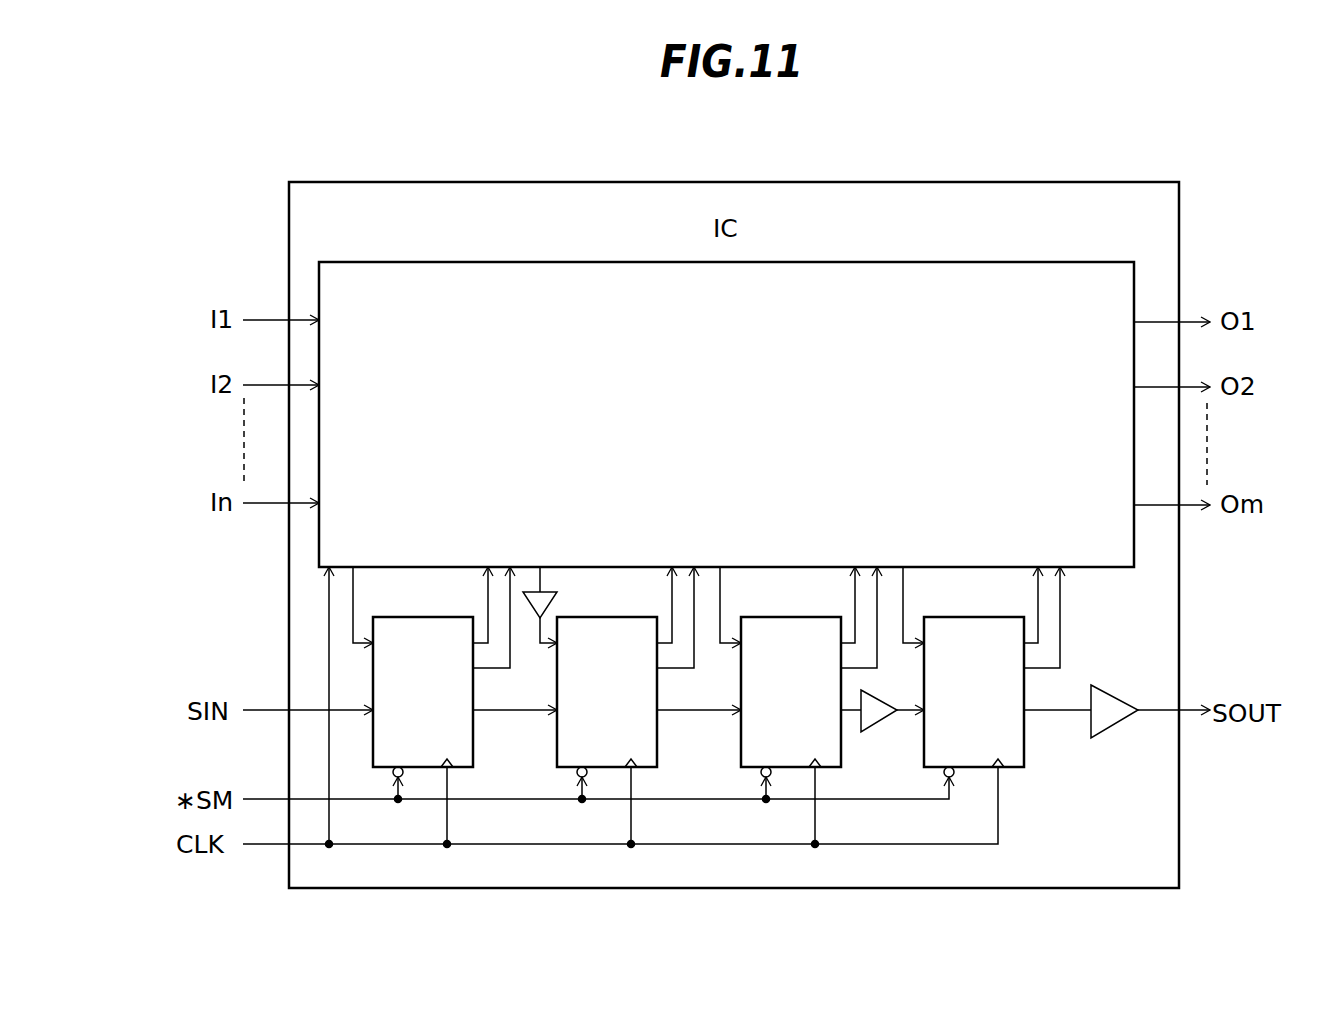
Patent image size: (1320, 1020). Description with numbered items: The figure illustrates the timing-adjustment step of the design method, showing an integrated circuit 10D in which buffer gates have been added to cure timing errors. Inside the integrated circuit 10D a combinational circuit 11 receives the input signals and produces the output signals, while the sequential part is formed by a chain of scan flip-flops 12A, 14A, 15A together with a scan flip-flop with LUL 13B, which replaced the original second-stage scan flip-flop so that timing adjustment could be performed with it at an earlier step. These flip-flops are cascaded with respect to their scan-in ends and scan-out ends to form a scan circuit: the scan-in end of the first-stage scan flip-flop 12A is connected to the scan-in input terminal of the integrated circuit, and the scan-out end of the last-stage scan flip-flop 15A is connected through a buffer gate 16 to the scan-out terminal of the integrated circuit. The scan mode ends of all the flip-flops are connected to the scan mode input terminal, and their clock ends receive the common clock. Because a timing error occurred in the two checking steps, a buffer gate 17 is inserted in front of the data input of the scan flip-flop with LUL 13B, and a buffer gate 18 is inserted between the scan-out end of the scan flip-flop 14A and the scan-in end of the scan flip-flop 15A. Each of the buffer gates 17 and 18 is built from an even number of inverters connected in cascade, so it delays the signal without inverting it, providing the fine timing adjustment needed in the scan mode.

The integrated circuit 10D is at (733, 182).
The combinational circuit 11 is at (913, 262).
The scan flip-flop 12A is at (405, 613).
The scan flip-flop with LUL 13B is at (589, 613).
The scan flip-flop 14A is at (773, 613).
The scan flip-flop 15A is at (956, 613).
The buffer gate 16 is at (1113, 692).
The buffer gate 17 is at (548, 585).
The buffer gate 18 is at (878, 728).